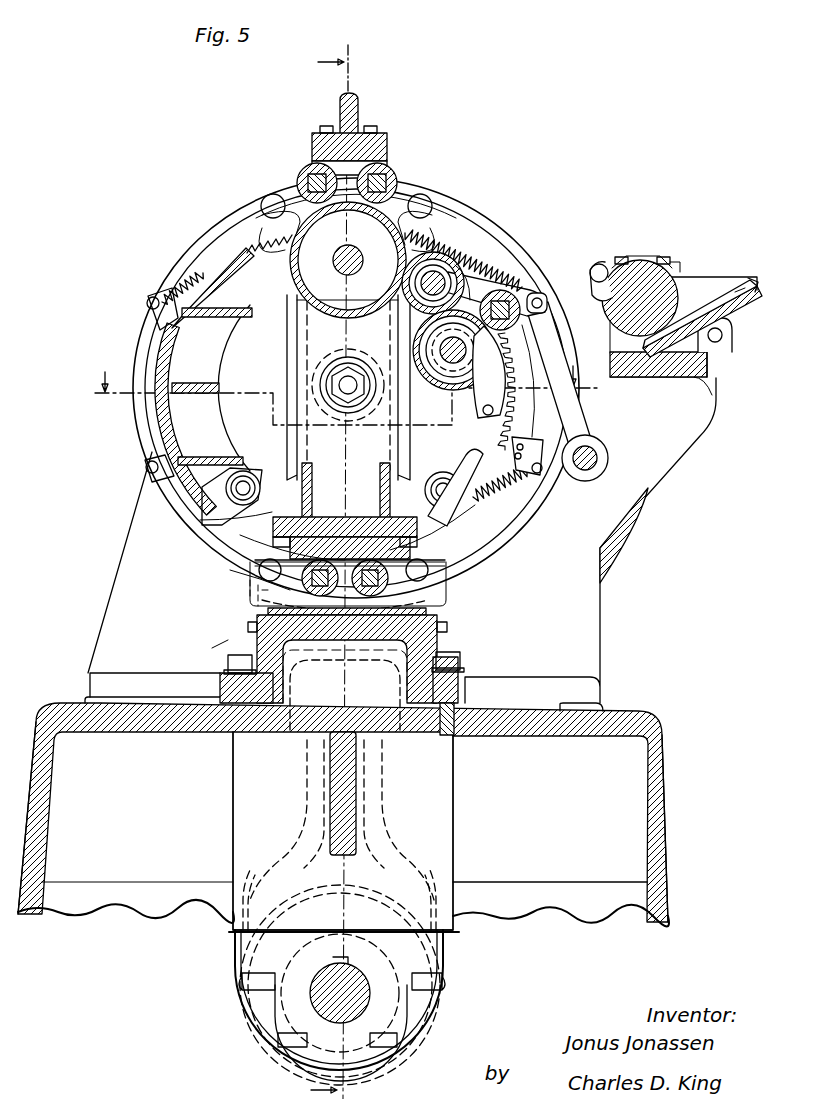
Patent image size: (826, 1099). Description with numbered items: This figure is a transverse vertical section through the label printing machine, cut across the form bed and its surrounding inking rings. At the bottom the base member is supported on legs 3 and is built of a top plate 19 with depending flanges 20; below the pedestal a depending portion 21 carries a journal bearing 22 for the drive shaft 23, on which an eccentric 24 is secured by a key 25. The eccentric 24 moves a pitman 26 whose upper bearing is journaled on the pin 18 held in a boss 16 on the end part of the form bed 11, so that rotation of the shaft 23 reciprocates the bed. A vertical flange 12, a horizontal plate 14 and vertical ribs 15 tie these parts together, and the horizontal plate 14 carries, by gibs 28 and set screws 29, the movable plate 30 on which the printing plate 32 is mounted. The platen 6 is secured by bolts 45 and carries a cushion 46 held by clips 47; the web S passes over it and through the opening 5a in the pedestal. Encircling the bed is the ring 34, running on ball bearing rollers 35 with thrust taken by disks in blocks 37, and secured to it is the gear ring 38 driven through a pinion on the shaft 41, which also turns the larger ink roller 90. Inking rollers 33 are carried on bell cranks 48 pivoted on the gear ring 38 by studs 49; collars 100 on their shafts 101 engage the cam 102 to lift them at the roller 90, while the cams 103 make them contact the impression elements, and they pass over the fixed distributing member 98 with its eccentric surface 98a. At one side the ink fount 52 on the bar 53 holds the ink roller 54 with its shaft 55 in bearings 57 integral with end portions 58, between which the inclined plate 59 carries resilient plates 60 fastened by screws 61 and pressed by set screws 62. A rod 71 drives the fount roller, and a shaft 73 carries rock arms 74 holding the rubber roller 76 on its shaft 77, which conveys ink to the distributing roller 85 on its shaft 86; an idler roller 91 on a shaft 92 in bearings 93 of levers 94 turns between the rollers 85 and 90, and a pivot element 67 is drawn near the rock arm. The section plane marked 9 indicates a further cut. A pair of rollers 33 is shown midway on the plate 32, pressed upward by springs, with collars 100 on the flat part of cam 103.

The legs 3 is at (550, 900).
The opening in the pedestal 5a is at (250, 604).
The platen 6 is at (345, 691).
The section line 9 is at (342, 392).
The platen or form bed 11 is at (300, 446).
The vertical flanges 12 is at (360, 110).
The horizontal plate 14 is at (265, 515).
The vertical ribs 15 is at (380, 464).
The bosses 16 is at (350, 356).
The short shafts or pins 18 is at (332, 380).
The top plate 19 is at (222, 718).
The depending flanges 20 is at (664, 840).
The depending portions 21 is at (455, 857).
The journal bearings 22 is at (430, 958).
The drive shaft 23 is at (312, 1005).
The eccentrics 24 is at (275, 955).
The keys 25 is at (349, 966).
The pitman or connecting member 26 is at (330, 800).
The gibs 28 is at (365, 510).
The set screws 29 is at (425, 548).
The movable plate 30 is at (447, 563).
The printing or label plate 32 is at (232, 572).
The inking rollers 33 is at (322, 598).
The rings 34 is at (160, 260).
The ball bearing rollers 35 is at (446, 474).
The blocks 37 is at (345, 158).
The second ring 38 is at (215, 240).
The shaft 41 is at (349, 275).
The bolts 45 is at (462, 664).
The cushion 46 is at (448, 626).
The clips 47 is at (442, 640).
The bell cranks 48 is at (428, 572).
The studs 49 is at (362, 238).
The ink fount 52 is at (692, 278).
The bar 53 is at (710, 362).
The ink roller 54 is at (597, 264).
The shaft 55 is at (648, 262).
The bearings 57 is at (682, 272).
The end portions 58 is at (736, 282).
The inclined rigid longitudinal plate 59 is at (734, 332).
The resilient plates 60 is at (700, 312).
The screws 61 is at (752, 290).
The set screws 62 is at (713, 400).
The pin 67 is at (548, 303).
The rod 71 is at (624, 522).
The shaft 73 is at (600, 456).
The rock arms 74 is at (584, 420).
The rubber roller 76 is at (505, 290).
The shaft 77 is at (522, 292).
The distributing or oscillating roller 85 is at (448, 388).
The shaft 86 is at (506, 437).
The larger ink roller 90 is at (348, 260).
The idler roller 91 is at (470, 260).
The shaft 92 is at (470, 283).
The journal bearings 93 is at (440, 255).
The levers 94 is at (495, 352).
The fixed distributing member 98 is at (168, 348).
The eccentric outer surface 98a is at (165, 433).
The collars 100 is at (388, 150).
The shafts 101 is at (440, 590).
The cam 102 is at (262, 240).
The cams 103 is at (470, 510).
The web or strip S is at (232, 628).